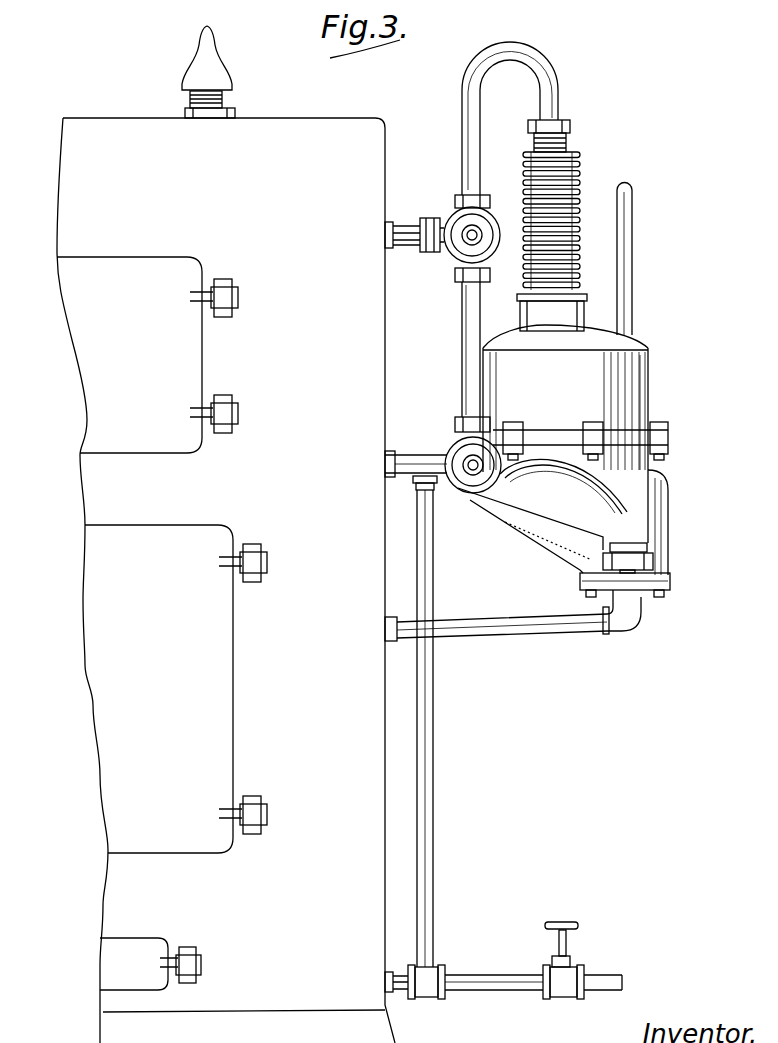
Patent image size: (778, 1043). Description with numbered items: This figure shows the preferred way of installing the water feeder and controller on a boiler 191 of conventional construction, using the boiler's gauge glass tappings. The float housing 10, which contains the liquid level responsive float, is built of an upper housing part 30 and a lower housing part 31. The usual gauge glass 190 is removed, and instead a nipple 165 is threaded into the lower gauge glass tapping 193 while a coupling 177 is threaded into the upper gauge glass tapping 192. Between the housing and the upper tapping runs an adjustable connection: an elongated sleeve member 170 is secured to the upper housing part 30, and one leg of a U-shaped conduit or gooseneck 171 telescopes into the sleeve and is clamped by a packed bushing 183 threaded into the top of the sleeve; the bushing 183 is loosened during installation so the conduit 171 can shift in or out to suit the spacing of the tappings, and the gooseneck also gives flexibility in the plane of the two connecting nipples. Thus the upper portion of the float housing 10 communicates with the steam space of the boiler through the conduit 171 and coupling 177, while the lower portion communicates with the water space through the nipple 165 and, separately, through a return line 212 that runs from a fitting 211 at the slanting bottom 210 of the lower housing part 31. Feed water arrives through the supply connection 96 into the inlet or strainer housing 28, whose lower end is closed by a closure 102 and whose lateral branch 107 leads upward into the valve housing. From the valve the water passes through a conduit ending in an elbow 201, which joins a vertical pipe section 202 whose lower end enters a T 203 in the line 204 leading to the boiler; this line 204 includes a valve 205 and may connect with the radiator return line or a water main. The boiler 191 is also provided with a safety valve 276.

The float housing 10 is at (635, 368).
The inlet or strainer housing 28 is at (666, 520).
The upper housing part 30 is at (633, 342).
The lower housing part 31 is at (640, 468).
The supply pipe 96 is at (632, 305).
The closure 102 is at (668, 582).
The lateral branch 107 is at (580, 562).
The nipple 165 is at (432, 454).
The sleeve member 170 is at (580, 153).
The U-shaped conduit 171 is at (562, 100).
The union 177 is at (437, 215).
The bushing 183 is at (572, 127).
The gauge glass 190 is at (462, 378).
The boiler 191 is at (305, 128).
The upper gauge glass tapping 192 is at (392, 222).
The lower gauge glass tapping 193 is at (456, 424).
The elbow 201 is at (434, 482).
The vertical pipe section 202 is at (432, 558).
The T 203 is at (433, 978).
The line 204 is at (523, 978).
The valve 205 is at (553, 968).
The slanting bottom 210 is at (513, 508).
The fitting 211 is at (650, 548).
The return line 212 is at (560, 620).
The safety valve 276 is at (217, 68).